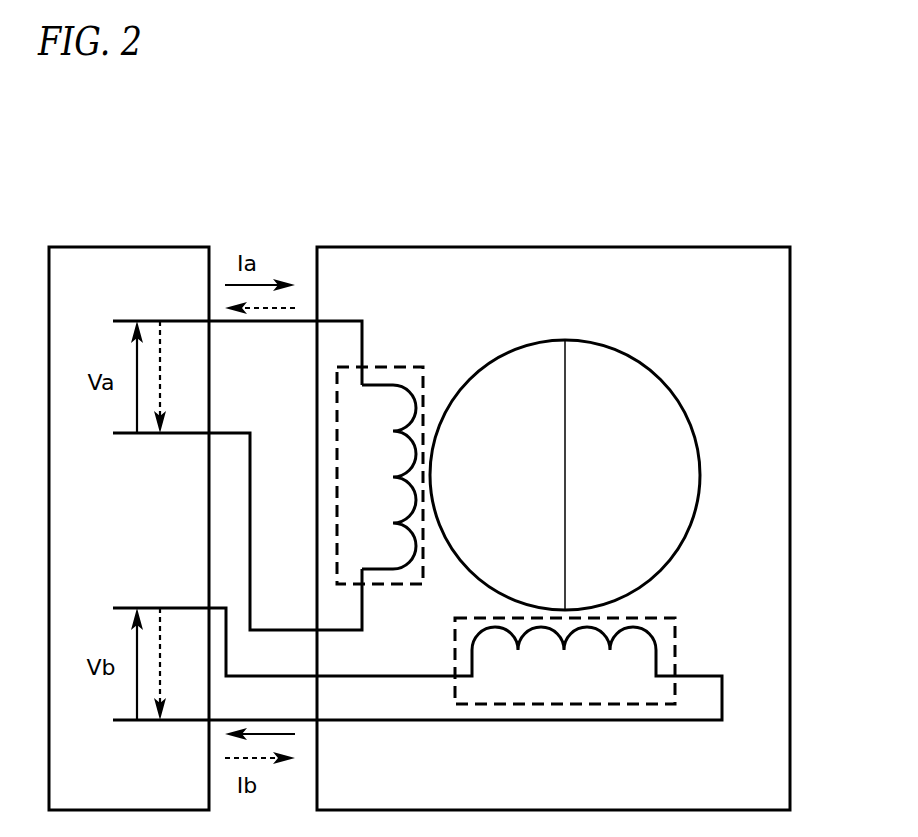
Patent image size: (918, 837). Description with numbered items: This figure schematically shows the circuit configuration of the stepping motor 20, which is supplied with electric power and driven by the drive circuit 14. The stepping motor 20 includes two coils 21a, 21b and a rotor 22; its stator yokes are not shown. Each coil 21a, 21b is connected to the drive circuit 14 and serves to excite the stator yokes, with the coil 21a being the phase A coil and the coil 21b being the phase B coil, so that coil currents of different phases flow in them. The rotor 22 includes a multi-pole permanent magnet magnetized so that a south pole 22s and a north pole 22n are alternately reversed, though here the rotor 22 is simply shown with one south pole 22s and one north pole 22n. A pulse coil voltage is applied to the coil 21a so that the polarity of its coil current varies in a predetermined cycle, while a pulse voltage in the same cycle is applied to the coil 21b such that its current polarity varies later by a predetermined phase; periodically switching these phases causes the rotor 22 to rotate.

The drive circuit 14 is at (149, 245).
The stepping motor 20 is at (645, 245).
The coil 21a is at (397, 360).
The coil 21b is at (677, 641).
The rotor 22 is at (653, 368).
The south pole 22s is at (505, 385).
The north pole 22n is at (647, 524).